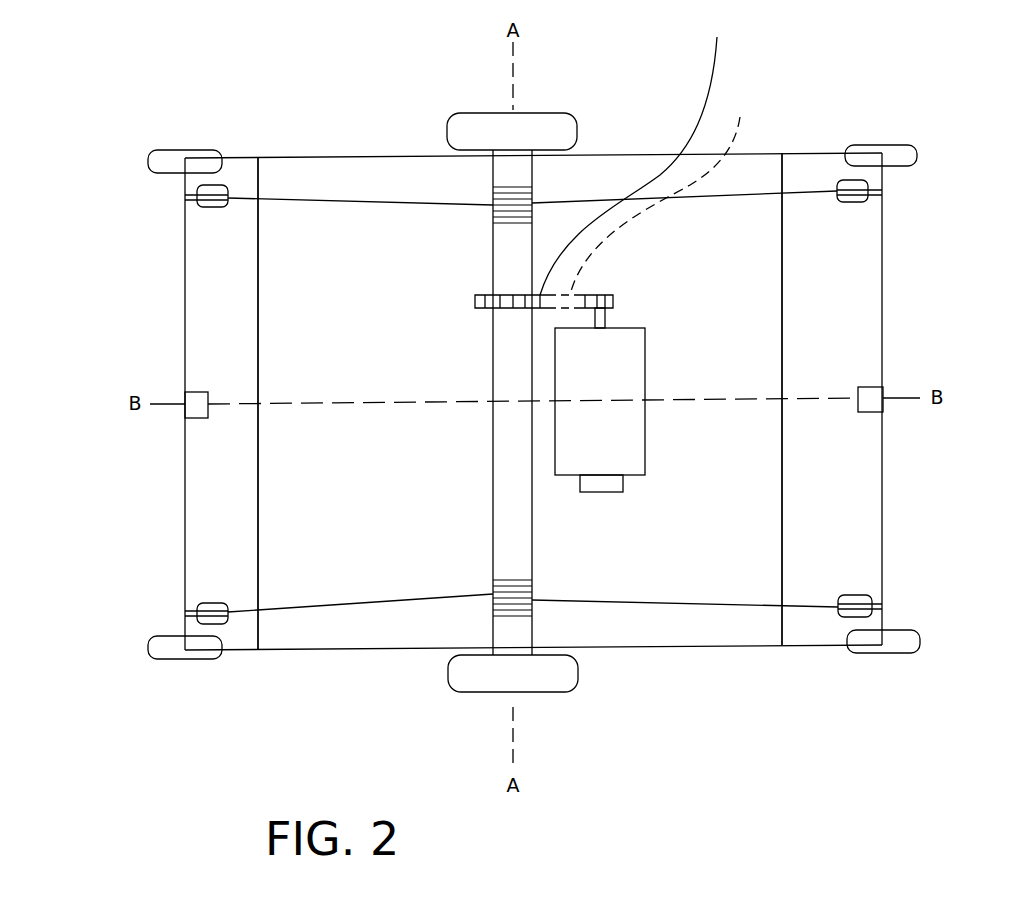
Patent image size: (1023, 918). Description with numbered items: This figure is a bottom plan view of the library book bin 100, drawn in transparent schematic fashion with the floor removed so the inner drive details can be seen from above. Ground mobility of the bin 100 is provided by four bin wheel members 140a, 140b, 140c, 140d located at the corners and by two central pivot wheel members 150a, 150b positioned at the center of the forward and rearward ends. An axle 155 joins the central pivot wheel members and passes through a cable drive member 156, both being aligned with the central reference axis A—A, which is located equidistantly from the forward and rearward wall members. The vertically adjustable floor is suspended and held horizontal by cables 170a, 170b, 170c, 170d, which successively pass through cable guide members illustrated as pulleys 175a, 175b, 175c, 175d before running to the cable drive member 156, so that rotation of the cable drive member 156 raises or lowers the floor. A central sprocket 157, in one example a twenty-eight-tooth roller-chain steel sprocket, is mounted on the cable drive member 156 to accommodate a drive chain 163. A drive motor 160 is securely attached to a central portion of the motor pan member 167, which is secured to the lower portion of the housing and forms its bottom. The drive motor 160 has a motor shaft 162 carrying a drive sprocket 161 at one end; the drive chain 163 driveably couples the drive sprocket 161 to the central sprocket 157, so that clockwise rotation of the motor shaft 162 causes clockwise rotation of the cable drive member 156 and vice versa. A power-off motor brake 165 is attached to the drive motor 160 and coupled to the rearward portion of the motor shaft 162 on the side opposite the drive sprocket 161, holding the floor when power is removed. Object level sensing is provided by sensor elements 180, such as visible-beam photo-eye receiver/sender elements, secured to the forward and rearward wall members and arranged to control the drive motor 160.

The book bin 100 is at (560, 786).
The bin wheel member 140a is at (167, 150).
The bin wheel member 140b is at (160, 662).
The bin wheel member 140c is at (905, 652).
The bin wheel member 140d is at (900, 150).
The central pivot wheel member 150a is at (563, 682).
The central pivot wheel member 150b is at (560, 118).
The axle 155 is at (512, 112).
The cable drive member 156 is at (490, 262).
The central sprocket 157 is at (641, 153).
The drive motor 160 is at (632, 460).
The drive sprocket 161 is at (608, 296).
The motor shaft 162 is at (606, 316).
The drive chain 163 is at (664, 192).
The motor brake 165 is at (600, 488).
The motor pan member 167 is at (533, 401).
The cable 170a is at (290, 198).
The cable 170b is at (282, 612).
The cable 170c is at (795, 607).
The cable 170d is at (800, 192).
The pulley 175a is at (208, 208).
The pulley 175b is at (208, 603).
The pulley 175c is at (862, 595).
The pulley 175d is at (850, 202).
The sensor element 180 is at (198, 400).